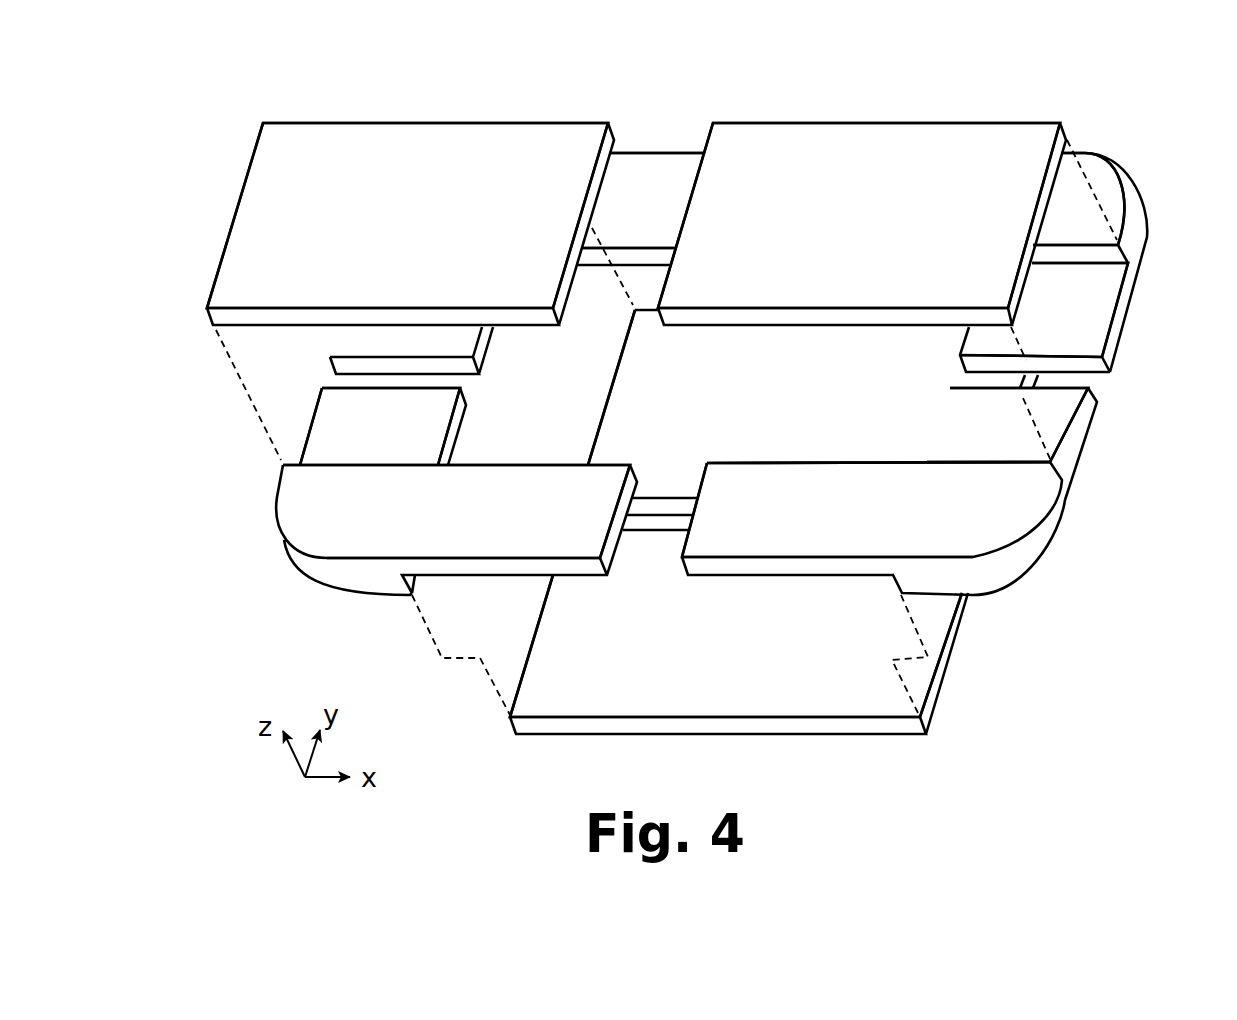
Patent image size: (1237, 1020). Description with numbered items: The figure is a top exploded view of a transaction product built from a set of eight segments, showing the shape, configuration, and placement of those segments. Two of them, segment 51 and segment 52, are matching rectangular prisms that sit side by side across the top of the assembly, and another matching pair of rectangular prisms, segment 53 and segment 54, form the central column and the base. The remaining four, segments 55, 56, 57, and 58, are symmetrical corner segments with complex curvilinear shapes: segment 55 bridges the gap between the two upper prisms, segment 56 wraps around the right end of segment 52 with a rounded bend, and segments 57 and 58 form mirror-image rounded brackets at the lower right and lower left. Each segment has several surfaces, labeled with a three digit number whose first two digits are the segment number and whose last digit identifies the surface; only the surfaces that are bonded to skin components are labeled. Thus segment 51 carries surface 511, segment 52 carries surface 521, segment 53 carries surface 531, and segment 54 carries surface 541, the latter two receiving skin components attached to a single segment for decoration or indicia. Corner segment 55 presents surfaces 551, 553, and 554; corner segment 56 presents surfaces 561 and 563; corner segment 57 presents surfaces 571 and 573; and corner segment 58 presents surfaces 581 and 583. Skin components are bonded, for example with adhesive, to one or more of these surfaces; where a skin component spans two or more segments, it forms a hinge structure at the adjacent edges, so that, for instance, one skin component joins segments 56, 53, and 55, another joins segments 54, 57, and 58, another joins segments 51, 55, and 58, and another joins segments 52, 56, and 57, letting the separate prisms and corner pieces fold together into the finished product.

The segment 51 is at (428, 112).
The surface 511 is at (447, 220).
The segment 52 is at (928, 110).
The surface 521 is at (880, 232).
The segment 53 is at (596, 402).
The surface 531 is at (817, 413).
The segment 54 is at (952, 688).
The surface 541 is at (743, 677).
The segment 55 is at (662, 144).
The surface 551 is at (675, 211).
The surface 553 is at (357, 342).
The surface 554 is at (630, 260).
The segment 56 is at (1140, 188).
The surface 561 is at (1100, 235).
The surface 563 is at (1102, 328).
The segment 57 is at (1040, 576).
The surface 571 is at (827, 529).
The surface 573 is at (1022, 447).
The segment 58 is at (285, 564).
The surface 581 is at (499, 531).
The surface 583 is at (401, 448).